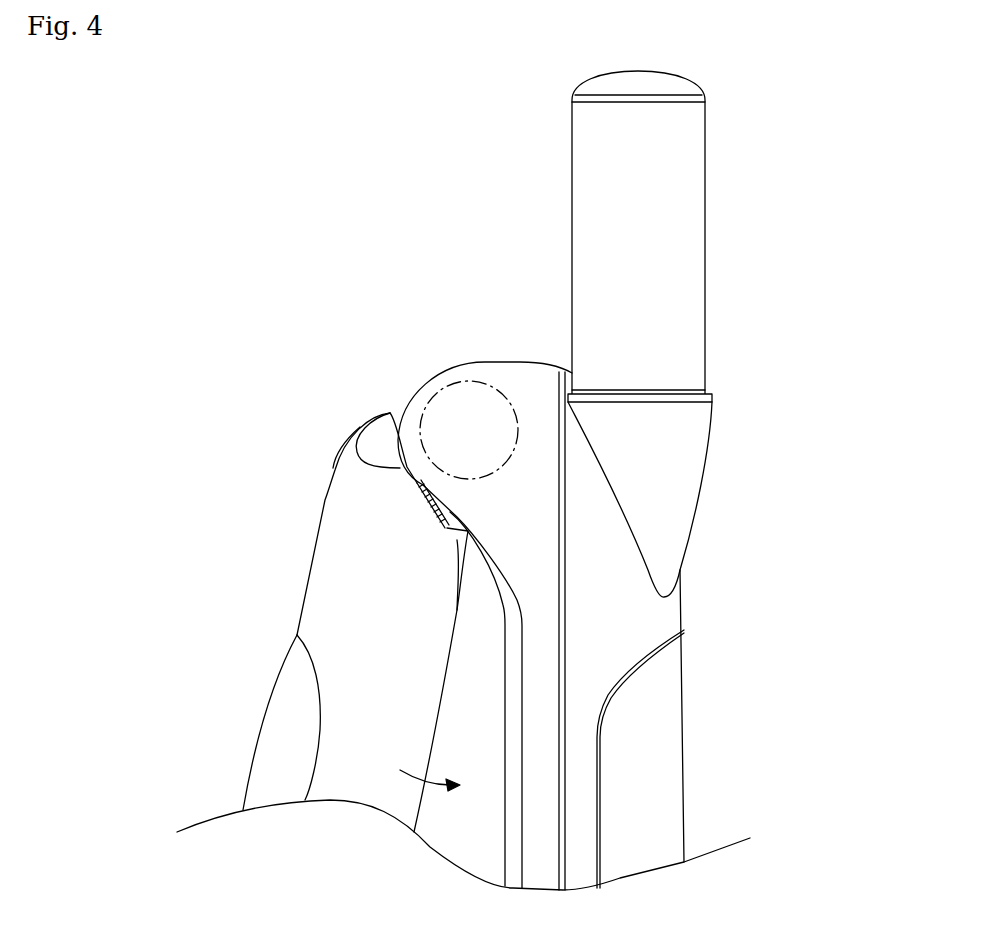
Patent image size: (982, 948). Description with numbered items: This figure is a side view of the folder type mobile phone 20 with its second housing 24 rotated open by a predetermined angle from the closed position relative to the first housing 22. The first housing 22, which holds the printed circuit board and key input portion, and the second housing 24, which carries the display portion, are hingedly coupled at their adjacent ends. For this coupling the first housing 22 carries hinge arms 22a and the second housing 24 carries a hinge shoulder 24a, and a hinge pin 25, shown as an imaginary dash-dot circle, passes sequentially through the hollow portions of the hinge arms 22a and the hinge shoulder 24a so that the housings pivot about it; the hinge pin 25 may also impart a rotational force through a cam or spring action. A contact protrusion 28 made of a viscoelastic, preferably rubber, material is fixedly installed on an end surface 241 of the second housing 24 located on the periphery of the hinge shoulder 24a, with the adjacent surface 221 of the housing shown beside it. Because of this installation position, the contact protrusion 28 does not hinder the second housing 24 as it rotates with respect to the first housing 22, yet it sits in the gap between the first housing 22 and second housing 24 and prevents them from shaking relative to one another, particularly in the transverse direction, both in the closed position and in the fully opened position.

The folder type mobile phone 20 is at (775, 365).
The first housing 22 is at (667, 615).
The hinge arm 22a is at (500, 370).
The end surface 221 is at (418, 432).
The second housing 24 is at (340, 753).
The hinge shoulder 24a is at (457, 542).
The end surface 241 is at (400, 468).
The hinge pin 25 is at (445, 412).
The contact protrusion 28 is at (437, 508).